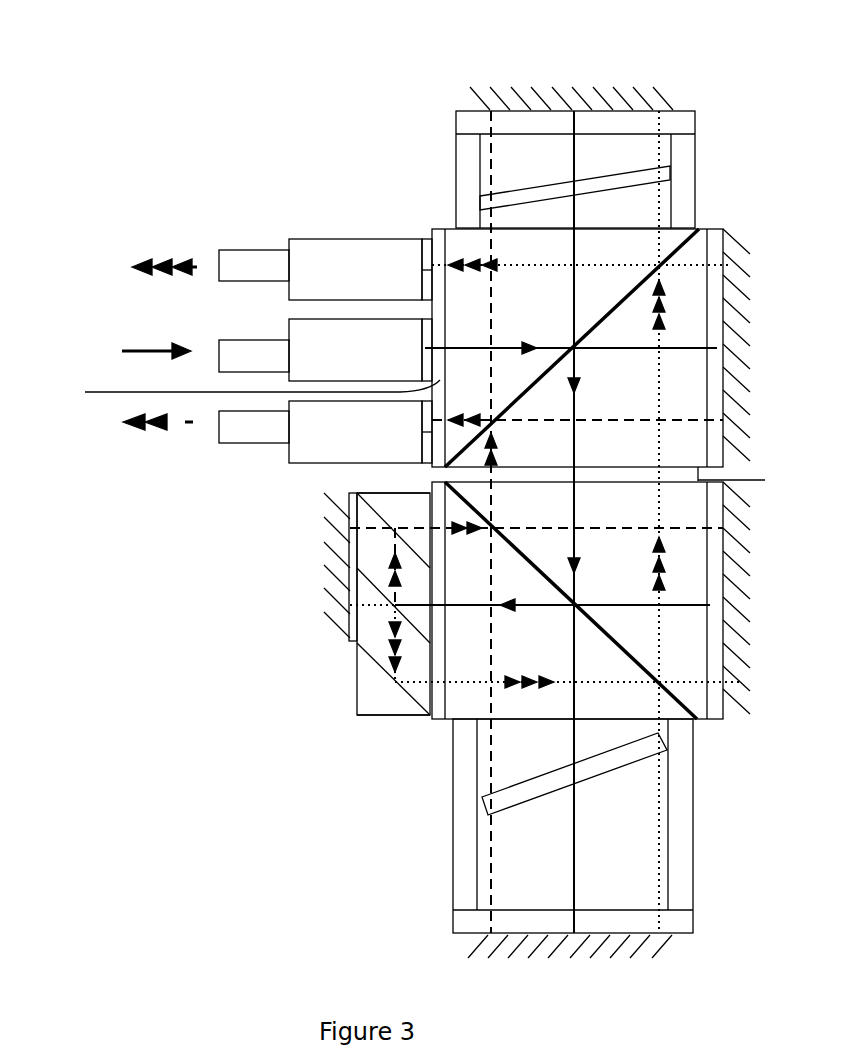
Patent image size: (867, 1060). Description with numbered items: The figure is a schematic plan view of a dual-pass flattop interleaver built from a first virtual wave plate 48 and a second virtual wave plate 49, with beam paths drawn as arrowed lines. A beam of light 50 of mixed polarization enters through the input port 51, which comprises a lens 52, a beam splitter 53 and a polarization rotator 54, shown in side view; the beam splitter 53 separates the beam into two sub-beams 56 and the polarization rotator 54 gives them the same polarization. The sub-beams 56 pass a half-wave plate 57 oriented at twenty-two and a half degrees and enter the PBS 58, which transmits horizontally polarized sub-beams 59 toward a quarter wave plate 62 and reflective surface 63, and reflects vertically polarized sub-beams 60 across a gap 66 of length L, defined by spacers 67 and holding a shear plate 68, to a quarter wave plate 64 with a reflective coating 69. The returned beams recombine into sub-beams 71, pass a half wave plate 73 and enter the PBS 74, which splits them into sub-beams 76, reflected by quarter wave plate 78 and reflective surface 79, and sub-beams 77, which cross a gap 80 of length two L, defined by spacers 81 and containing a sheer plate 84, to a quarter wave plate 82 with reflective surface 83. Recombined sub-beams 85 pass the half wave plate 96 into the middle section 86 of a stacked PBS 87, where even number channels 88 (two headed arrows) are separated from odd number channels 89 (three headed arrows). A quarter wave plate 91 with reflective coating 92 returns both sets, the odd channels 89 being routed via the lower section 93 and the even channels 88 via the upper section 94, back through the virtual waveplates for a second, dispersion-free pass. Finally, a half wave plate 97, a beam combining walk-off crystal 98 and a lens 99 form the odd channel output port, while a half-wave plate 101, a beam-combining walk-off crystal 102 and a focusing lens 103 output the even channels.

The first virtual wave plate 48 is at (748, 320).
The second virtual wave plate 49 is at (748, 535).
The beam of light 50 is at (120, 338).
The input port 51 is at (212, 320).
The lens 52 is at (230, 355).
The beam splitter 53 is at (317, 338).
The polarization rotator 54 is at (242, 394).
The input sub-beams 56 is at (571, 341).
The half-wave plate 57 is at (445, 230).
The PBS 58 is at (699, 230).
The horizontally polarized sub-beams 59 is at (616, 522).
The vertically polarized sub-beams 60 is at (582, 285).
The quarter wave plate 62 is at (712, 408).
The reflective surface 63 is at (730, 372).
The quarter wave plate 64 is at (695, 120).
The gap 66 is at (575, 169).
The spacers 67 is at (457, 138).
The shear plate 68 is at (638, 177).
The reflective coating 69 is at (587, 107).
The recombined sub-beams 71 is at (577, 522).
The half wave plate 73 is at (750, 480).
The PBS 74 is at (694, 722).
The sub-beams 76 is at (536, 560).
The sub-beams 77 is at (567, 659).
The quarter wave plate 78 is at (710, 695).
The reflective surface 79 is at (728, 625).
The gap 80 is at (573, 826).
The spacers 81 is at (460, 892).
The quarter wave plate 82 is at (695, 930).
The reflective surface 83 is at (602, 945).
The sheer plate 84 is at (623, 768).
The recombined sub-beams 85 is at (530, 616).
The middle section 86 is at (372, 624).
The stacked PBS 87 is at (263, 695).
The even number channels 88 is at (390, 568).
The odd number channels 89 is at (390, 642).
The quarter wave plate 91 is at (350, 553).
The reflective coating 92 is at (332, 520).
The lower section 93 is at (405, 695).
The upper section 94 is at (370, 497).
The half wave plate 96 is at (440, 719).
The half wave plate 97 is at (422, 243).
The beam combining walk-off crystal 98 is at (299, 243).
The lens 99 is at (230, 248).
The half-wave plate 101 is at (427, 410).
The beam-combining walk-off crystal 102 is at (302, 446).
The focusing lens 103 is at (228, 425).